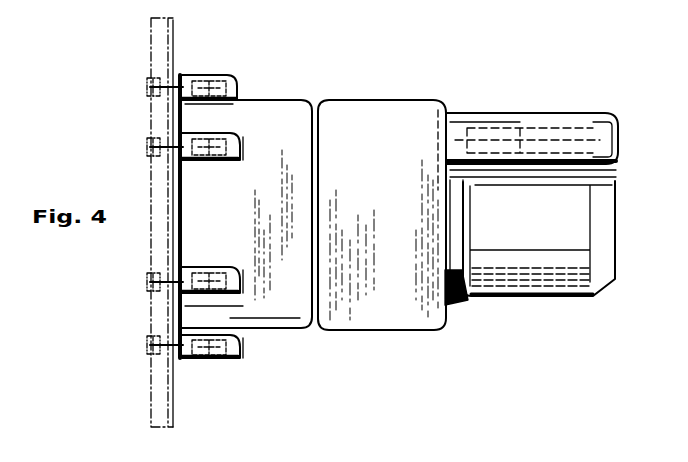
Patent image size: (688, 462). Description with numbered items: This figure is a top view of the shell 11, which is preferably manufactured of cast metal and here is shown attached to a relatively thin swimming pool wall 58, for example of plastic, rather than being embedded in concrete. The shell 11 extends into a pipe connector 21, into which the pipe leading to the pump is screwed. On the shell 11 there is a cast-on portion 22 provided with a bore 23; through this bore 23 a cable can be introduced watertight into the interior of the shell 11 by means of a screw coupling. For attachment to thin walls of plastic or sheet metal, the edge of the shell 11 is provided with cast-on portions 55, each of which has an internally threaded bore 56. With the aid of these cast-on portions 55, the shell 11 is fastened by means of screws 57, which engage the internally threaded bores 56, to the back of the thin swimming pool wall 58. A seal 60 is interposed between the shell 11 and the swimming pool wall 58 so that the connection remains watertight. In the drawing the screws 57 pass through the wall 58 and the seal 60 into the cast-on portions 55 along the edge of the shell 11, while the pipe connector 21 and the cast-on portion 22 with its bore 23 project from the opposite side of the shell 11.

The shell 11 is at (367, 110).
The pipe connector 21 is at (531, 272).
The cast-on portion 22 is at (530, 120).
The bore 23 is at (558, 135).
The cast-on portions 55 is at (225, 133).
The internally threaded bores 56 is at (197, 83).
The screws 57 is at (150, 124).
The swimming pool wall 58 is at (153, 41).
The seal 60 is at (172, 237).